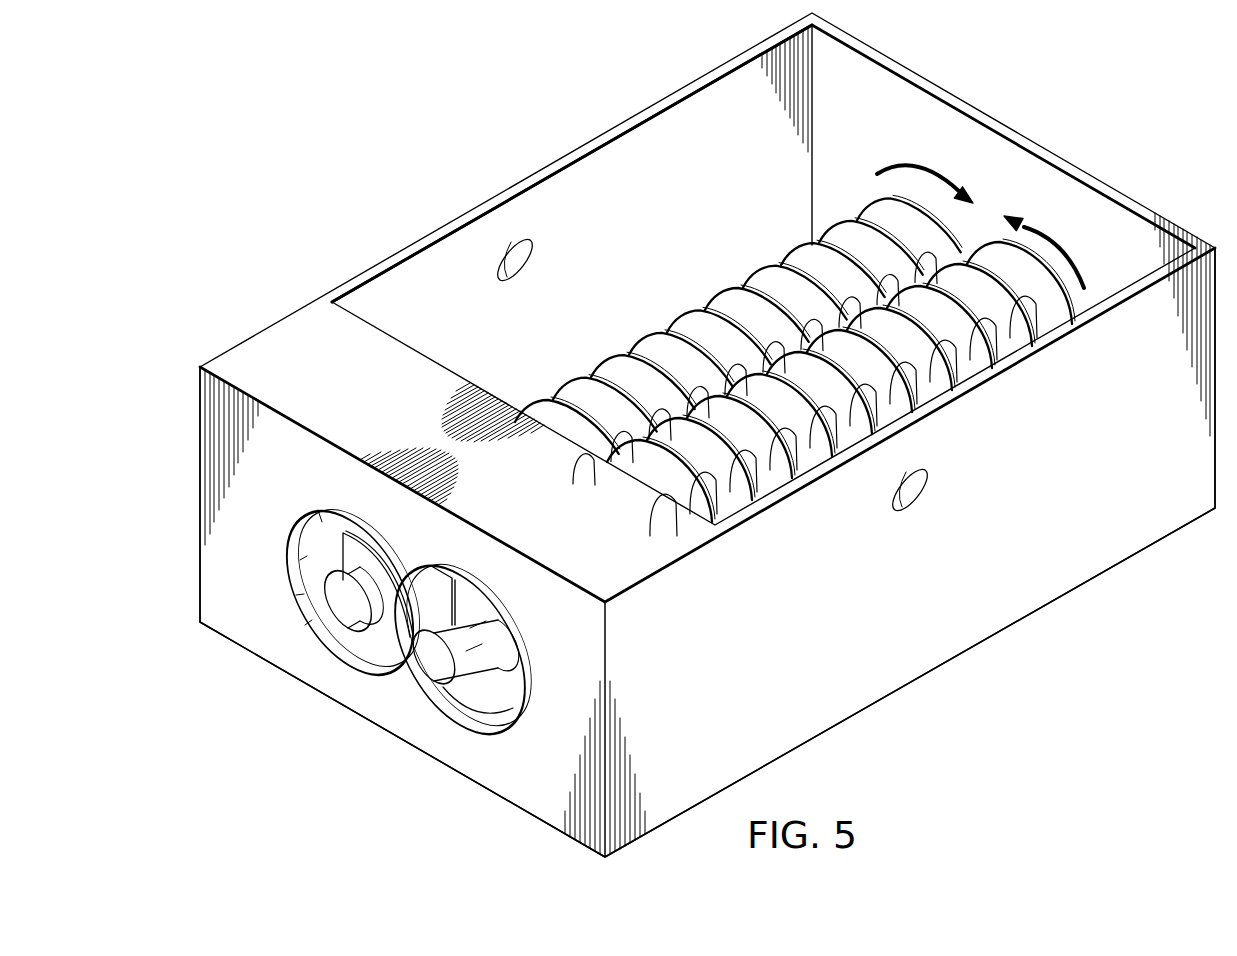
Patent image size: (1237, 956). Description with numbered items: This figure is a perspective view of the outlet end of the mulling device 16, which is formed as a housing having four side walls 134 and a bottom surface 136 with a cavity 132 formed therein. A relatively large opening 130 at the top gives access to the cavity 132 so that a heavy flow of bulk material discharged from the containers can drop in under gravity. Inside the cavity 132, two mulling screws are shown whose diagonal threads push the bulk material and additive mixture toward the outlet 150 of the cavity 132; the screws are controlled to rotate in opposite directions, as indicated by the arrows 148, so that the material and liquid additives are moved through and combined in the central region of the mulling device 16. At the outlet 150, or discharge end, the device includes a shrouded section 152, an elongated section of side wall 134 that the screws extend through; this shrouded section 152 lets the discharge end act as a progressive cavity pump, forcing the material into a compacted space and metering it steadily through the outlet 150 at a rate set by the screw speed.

The mulling device 16 is at (407, 148).
The opening 130 is at (728, 122).
The cavity 132 is at (620, 184).
The side walls 134 is at (267, 323).
The bottom surface 136 is at (350, 710).
The arrows 148 is at (913, 163).
The outlet 150 is at (289, 619).
The shrouded section 152 is at (393, 372).